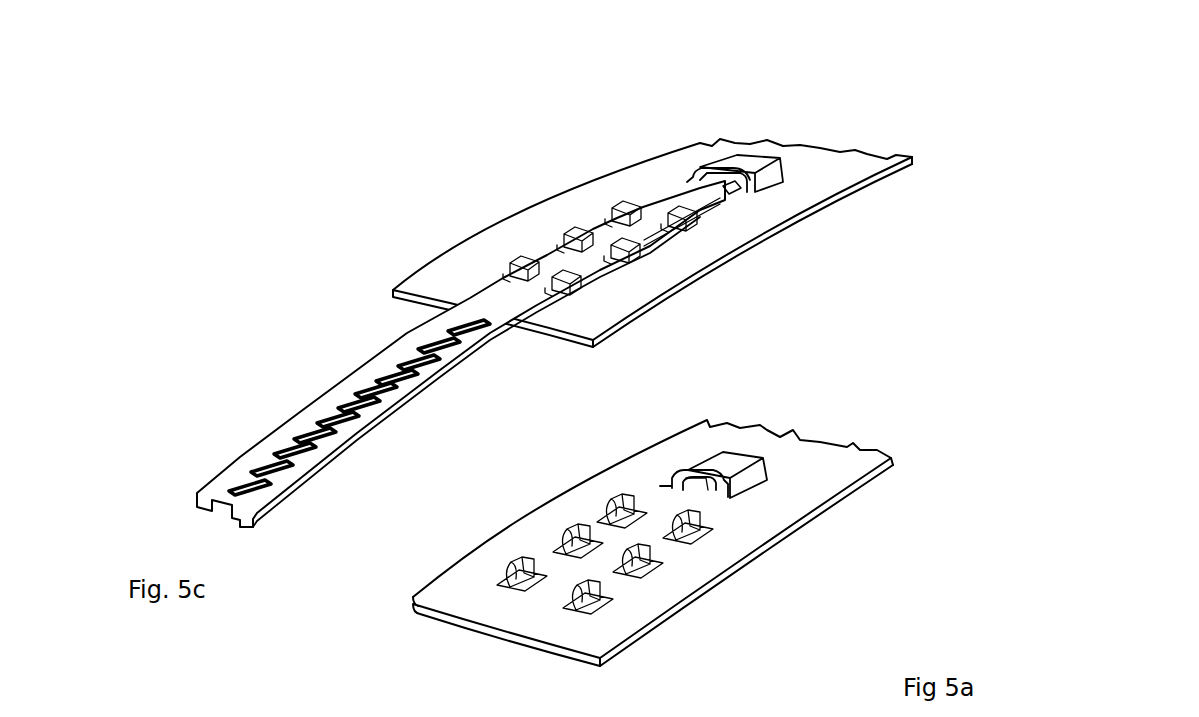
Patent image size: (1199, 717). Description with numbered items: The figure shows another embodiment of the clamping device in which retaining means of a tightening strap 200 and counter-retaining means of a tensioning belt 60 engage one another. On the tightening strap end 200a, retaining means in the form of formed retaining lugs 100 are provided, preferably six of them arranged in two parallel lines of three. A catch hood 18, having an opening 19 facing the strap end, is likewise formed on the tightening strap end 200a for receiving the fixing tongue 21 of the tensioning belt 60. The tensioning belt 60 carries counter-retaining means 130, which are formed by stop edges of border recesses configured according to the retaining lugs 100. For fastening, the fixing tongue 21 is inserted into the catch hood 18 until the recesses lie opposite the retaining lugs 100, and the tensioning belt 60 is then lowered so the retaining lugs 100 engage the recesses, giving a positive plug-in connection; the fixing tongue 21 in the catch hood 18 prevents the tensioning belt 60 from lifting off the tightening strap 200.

In FIG. 5C, the catch hood 18 is at (750, 162).
In FIG. 5A, the catch hood 18 is at (727, 463).
In FIG. 5A, the opening 19 is at (710, 488).
In FIG. 5C, the fixing tongue 21 is at (722, 180).
In FIG. 5C, the tensioning belt 60 is at (287, 435).
In FIG. 5C, the retaining lugs 100 is at (624, 203).
In FIG. 5A, the retaining lugs 100 is at (613, 490).
In FIG. 5C, the counter-retaining means 130 is at (641, 243).
In FIG. 5A, the tightening strap 200 is at (684, 511).
In FIG. 5C, the tightening strap end 200a is at (455, 262).
In FIG. 5A, the tightening strap end 200a is at (803, 487).